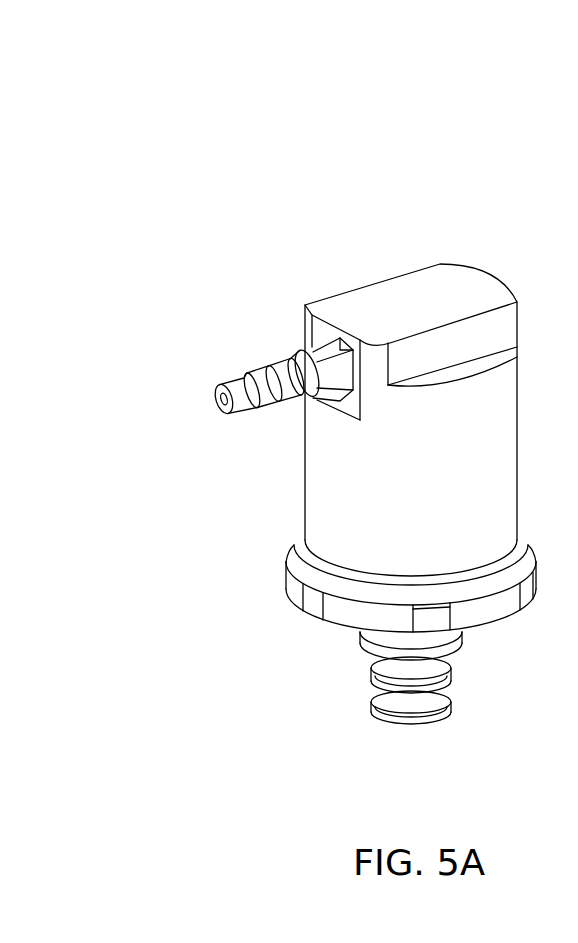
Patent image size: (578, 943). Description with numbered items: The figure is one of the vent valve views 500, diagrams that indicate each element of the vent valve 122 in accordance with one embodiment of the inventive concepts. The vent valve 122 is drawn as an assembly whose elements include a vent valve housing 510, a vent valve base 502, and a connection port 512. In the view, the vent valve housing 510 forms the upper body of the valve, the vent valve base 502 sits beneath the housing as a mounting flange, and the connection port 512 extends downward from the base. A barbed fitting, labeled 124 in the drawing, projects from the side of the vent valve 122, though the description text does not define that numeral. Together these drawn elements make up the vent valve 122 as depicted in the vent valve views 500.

The vent valve views 500 is at (103, 111).
The vent valve 122 is at (372, 278).
The vent valve housing 510 is at (454, 284).
The hose barb fitting 124 is at (215, 396).
The vent valve base 502 is at (290, 578).
The connection port 512 is at (378, 718).